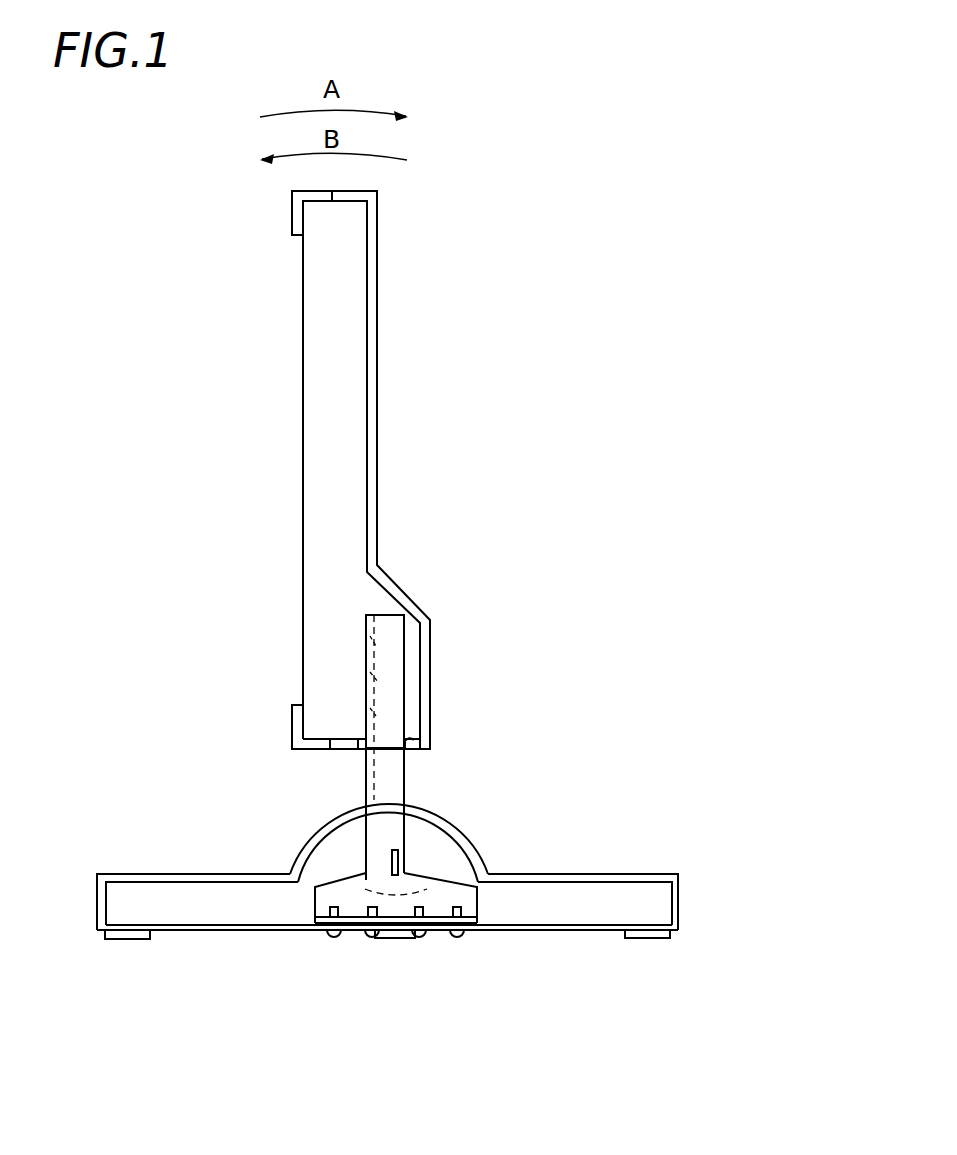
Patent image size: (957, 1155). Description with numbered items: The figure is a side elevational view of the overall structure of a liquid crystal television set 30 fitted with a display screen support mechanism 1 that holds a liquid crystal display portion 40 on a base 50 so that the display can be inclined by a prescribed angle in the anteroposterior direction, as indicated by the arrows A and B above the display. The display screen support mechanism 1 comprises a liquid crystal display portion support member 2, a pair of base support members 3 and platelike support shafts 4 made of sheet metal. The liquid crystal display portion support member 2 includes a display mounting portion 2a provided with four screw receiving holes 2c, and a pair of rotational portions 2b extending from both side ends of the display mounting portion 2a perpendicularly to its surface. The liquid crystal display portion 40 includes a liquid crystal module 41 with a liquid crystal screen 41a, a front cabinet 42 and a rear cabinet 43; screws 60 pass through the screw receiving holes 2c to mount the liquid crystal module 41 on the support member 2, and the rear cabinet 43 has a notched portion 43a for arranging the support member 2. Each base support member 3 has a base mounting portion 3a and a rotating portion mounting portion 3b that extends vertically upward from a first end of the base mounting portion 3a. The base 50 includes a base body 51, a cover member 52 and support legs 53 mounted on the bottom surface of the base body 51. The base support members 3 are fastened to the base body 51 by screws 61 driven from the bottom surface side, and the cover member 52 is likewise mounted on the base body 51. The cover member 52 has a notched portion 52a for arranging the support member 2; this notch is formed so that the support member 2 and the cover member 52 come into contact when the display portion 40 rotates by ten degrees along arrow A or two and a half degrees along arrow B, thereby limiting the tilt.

The display screen support mechanism 1 is at (386, 670).
The liquid crystal display portion support member 2 is at (382, 614).
The display mounting portion 2a is at (370, 677).
The rotational portions 2b is at (390, 647).
The screw receiving holes 2c is at (370, 641).
The base support members 3 is at (313, 896).
The base mounting portions 3a is at (465, 927).
The rotating portion mounting portions 3b is at (312, 894).
The support shafts 4 is at (392, 850).
The liquid crystal television set 30 is at (540, 250).
The liquid crystal display portion 40 is at (336, 360).
The liquid crystal module 41 is at (336, 400).
The liquid crystal screen 41a is at (301, 444).
The front cabinet 42 is at (298, 218).
The rear cabinet 43 is at (370, 452).
The notched portion 43a is at (412, 735).
The base 50 is at (648, 906).
The base body 51 is at (672, 930).
The cover member 52 is at (585, 874).
The notched portion 52a is at (470, 840).
The support legs 53 is at (129, 939).
The screws 60 is at (403, 614).
The screws 61 is at (333, 940).